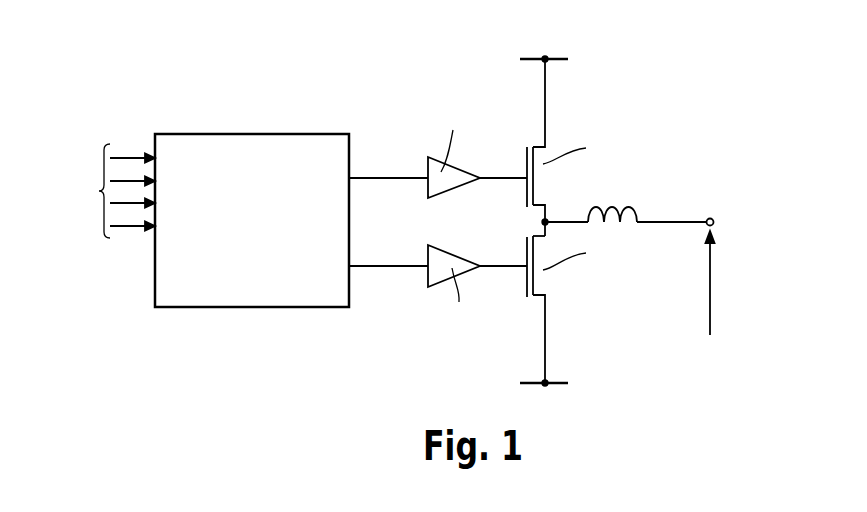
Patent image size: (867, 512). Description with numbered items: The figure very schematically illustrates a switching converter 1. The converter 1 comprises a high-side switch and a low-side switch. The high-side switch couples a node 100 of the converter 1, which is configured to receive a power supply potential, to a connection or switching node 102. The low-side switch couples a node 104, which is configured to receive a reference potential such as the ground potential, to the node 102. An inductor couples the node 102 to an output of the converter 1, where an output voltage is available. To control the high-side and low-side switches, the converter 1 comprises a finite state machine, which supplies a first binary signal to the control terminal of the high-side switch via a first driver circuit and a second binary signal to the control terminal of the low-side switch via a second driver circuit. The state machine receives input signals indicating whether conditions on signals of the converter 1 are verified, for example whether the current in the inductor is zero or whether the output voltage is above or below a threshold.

The switching converter 1 is at (663, 72).
The node 100 is at (545, 60).
The connection node 102 is at (546, 221).
The node 104 is at (546, 382).